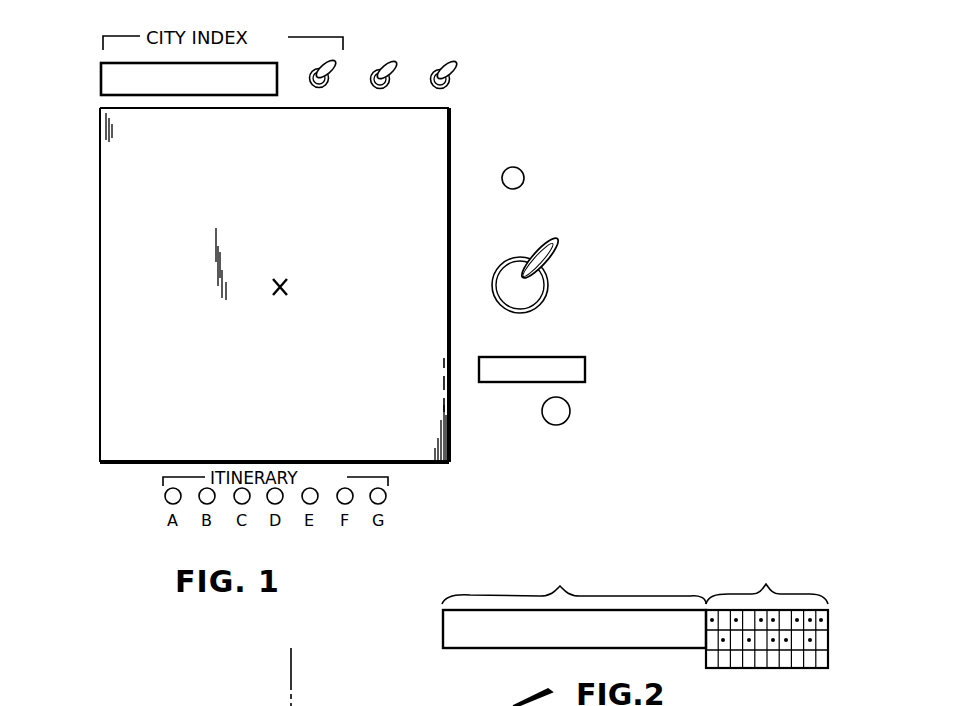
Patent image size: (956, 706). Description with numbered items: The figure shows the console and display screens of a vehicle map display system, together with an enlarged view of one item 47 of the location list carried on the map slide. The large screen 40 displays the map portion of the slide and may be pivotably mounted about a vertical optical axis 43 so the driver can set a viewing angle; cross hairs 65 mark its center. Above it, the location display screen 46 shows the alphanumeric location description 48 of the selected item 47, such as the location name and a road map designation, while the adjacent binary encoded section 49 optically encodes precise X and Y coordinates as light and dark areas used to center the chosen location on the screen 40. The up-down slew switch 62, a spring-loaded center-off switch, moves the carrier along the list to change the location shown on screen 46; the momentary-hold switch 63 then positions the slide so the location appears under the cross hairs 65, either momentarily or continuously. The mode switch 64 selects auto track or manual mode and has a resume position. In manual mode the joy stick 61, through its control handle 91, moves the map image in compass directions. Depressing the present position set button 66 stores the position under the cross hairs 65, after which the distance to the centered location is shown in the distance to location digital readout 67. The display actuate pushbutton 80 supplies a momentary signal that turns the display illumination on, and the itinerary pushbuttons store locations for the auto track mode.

In FIG. 1, the screen 40 is at (449, 404).
In FIG. 2, the vertical optical axis 43 is at (292, 676).
In FIG. 1, the location display screen 46 is at (101, 78).
In FIG. 2, the item 47 is at (443, 628).
In FIG. 2, the alphanumeric location description 48 is at (574, 581).
In FIG. 2, the binary encoded section 49 is at (803, 613).
In FIG. 1, the joy stick 61 is at (539, 274).
In FIG. 1, the slew switch 62 is at (310, 78).
In FIG. 1, the momentary-hold switch 63 is at (412, 92).
In FIG. 1, the mode switch 64 is at (452, 85).
In FIG. 1, the cross hairs 65 is at (279, 297).
In FIG. 1, the present position set button 66 is at (524, 179).
In FIG. 1, the distance to location digital readout 67 is at (588, 368).
In FIG. 1, the display actuate pushbutton 80 is at (570, 410).
In FIG. 1, the control handle 91 is at (558, 236).